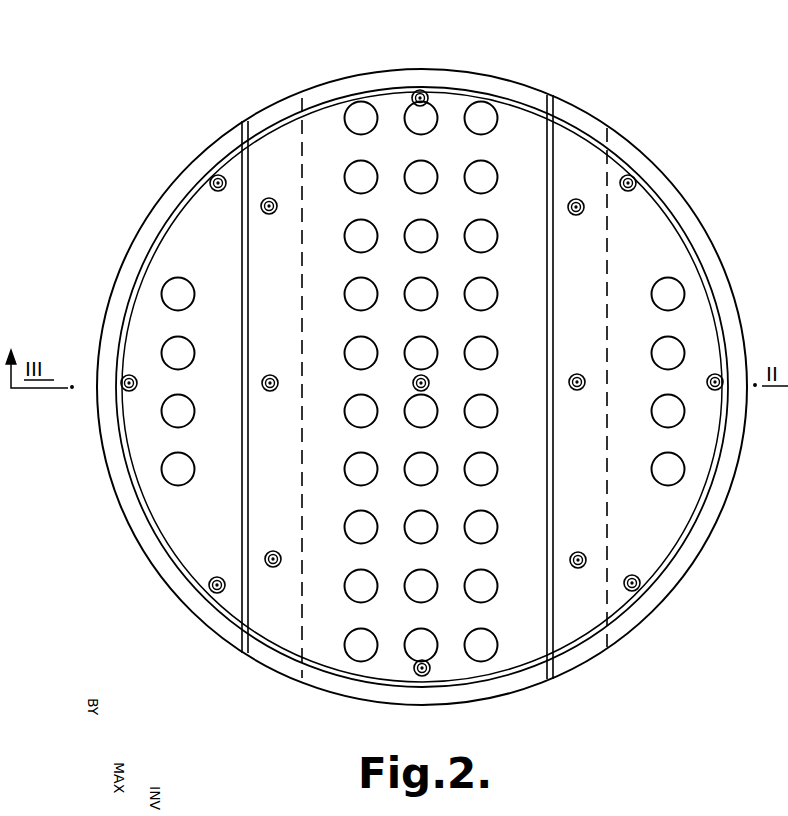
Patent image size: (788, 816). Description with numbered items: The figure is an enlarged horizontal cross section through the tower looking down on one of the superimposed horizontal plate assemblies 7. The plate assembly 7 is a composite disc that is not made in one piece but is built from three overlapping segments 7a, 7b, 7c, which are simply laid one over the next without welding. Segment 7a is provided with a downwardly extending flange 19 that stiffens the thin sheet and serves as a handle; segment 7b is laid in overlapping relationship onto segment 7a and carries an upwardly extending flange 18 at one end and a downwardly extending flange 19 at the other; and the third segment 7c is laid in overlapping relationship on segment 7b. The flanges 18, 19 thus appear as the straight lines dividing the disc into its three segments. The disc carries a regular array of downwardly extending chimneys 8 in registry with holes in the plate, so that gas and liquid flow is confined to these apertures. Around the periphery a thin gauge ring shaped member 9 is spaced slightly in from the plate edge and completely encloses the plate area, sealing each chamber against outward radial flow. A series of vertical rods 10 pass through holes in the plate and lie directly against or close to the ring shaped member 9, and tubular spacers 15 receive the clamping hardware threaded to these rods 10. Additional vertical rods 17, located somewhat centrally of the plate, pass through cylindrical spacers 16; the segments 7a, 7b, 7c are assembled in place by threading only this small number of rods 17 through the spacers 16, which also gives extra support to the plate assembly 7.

The horizontal plate assembly 7 is at (541, 92).
The plate segment 7a is at (200, 212).
The plate segment 7b is at (448, 130).
The plate segment 7c is at (657, 242).
The chimney 8 is at (497, 168).
The ring shaped member 9 is at (655, 187).
The vertical rod 10 is at (125, 388).
The tubular spacer 15 is at (128, 372).
The cylindrical spacer 16 is at (265, 213).
The vertical rod 17 is at (268, 198).
The upwardly extending flange 18 is at (237, 535).
The downwardly extending flange 19 is at (304, 622).